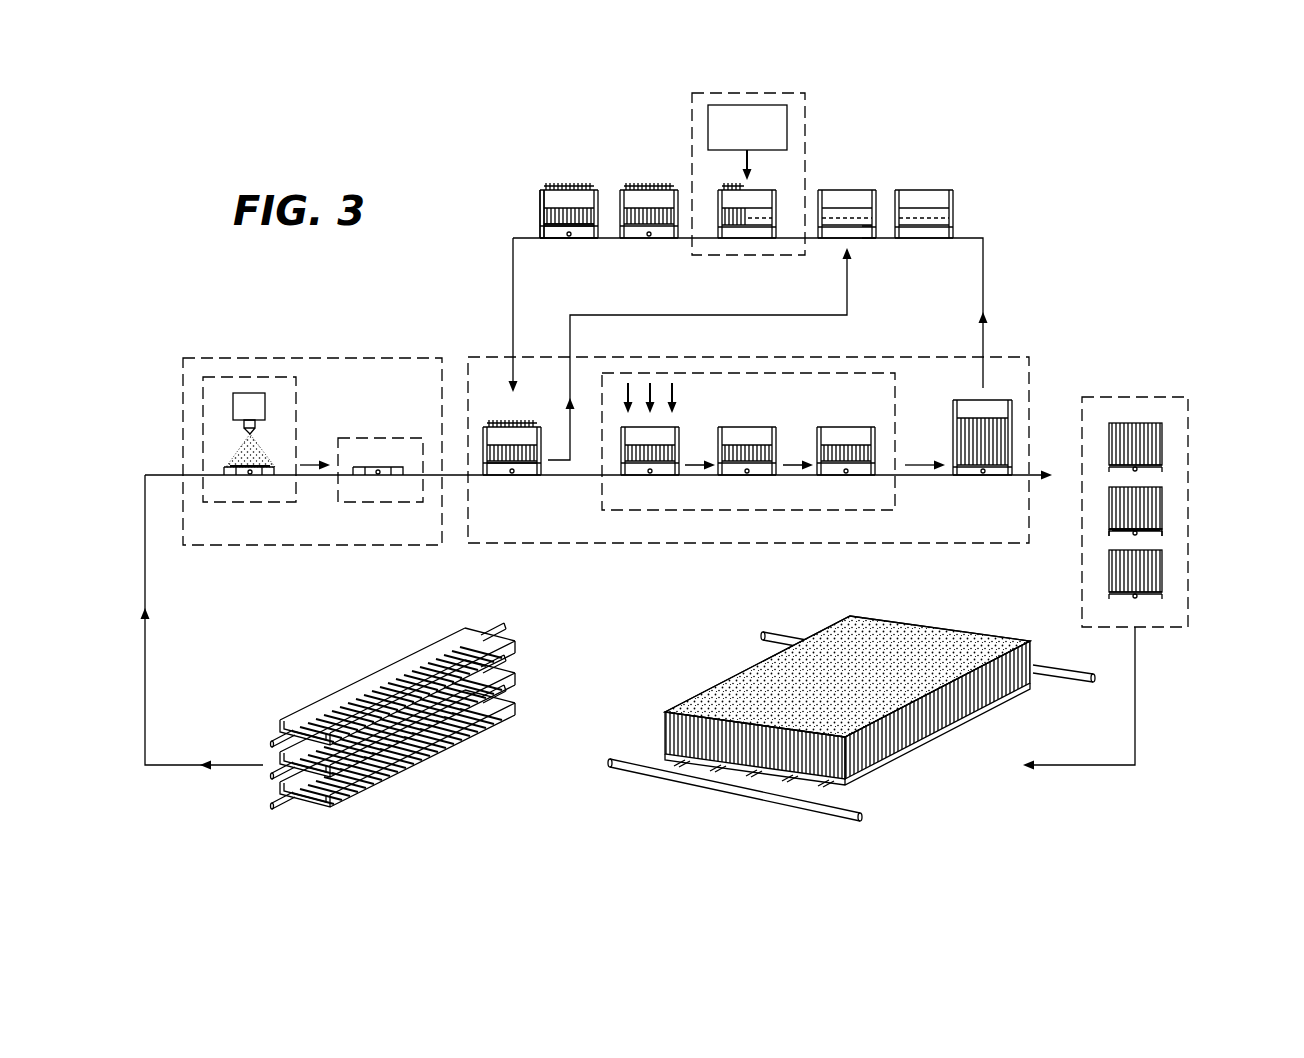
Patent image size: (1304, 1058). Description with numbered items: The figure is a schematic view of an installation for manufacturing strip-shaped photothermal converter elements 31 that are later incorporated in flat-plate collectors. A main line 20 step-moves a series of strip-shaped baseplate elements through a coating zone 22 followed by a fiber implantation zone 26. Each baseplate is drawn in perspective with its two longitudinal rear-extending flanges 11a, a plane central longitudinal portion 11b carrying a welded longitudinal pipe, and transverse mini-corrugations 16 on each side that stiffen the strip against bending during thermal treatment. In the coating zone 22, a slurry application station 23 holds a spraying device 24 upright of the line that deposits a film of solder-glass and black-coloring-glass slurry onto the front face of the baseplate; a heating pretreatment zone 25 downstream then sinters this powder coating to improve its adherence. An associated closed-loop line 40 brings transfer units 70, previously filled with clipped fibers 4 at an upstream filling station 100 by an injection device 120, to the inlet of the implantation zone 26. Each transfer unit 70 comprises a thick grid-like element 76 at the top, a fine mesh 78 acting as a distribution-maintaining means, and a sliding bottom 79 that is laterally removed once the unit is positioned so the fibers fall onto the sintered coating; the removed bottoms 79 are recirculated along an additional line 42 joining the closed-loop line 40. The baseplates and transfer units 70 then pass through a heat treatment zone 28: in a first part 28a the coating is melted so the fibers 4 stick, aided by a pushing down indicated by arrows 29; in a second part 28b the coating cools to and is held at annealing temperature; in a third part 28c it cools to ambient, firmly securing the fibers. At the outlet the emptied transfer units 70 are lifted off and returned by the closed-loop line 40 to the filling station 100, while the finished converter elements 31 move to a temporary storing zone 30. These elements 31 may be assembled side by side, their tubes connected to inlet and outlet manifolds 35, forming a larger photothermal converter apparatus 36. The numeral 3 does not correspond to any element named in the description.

The block of product 3 is at (1157, 414).
The clipped fibers 4 is at (1000, 437).
The longitudinal rear-extending flanges 11a is at (402, 711).
The central longitudinal portion 11b is at (475, 632).
The mini-corrugations 16 is at (375, 678).
The main line 20 is at (160, 472).
The coating zone 22 is at (368, 357).
The slurry application station 23 is at (296, 384).
The spraying device 24 is at (250, 393).
The heating pretreatment zone 25 is at (385, 438).
The fiber implantation zone 26 is at (470, 357).
The heat treatment zone 28 is at (880, 373).
The first part of the heat treatment zone 28a is at (656, 490).
The second part of the heat treatment zone 28b is at (752, 490).
The third part of the heat treatment zone 28c is at (852, 490).
The pushing down arrows 29 is at (676, 395).
The temporary storing zone 30 is at (1120, 397).
The photothermal converter elements 31 is at (1175, 451).
The inlet and outlet manifolds 35 is at (766, 640).
The photothermal converter apparatus 36 is at (851, 722).
The closed-loop line 40 is at (985, 278).
The additional line 42 is at (712, 315).
The transfer units 70 is at (633, 182).
The grid-like element 76 is at (548, 206).
The fine mesh 78 is at (545, 223).
The bottom 79 is at (571, 240).
The filling station 100 is at (805, 98).
The injection device 120 is at (777, 133).